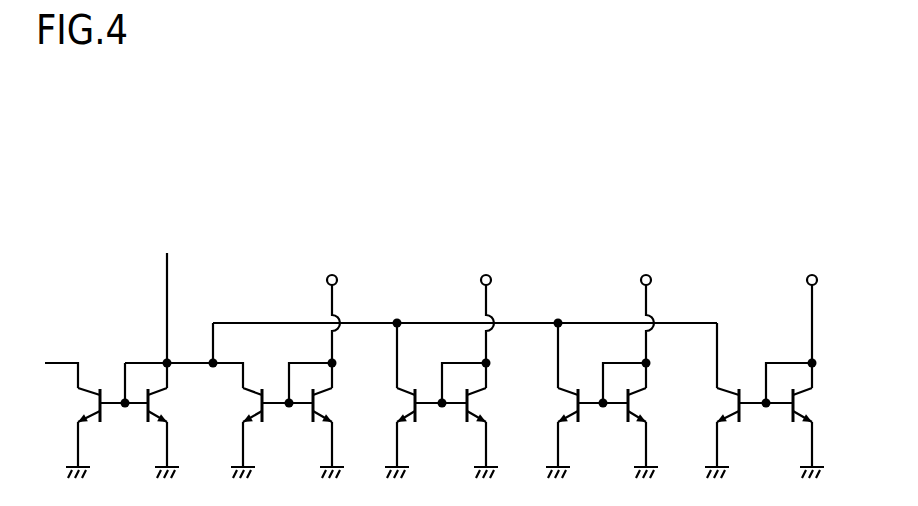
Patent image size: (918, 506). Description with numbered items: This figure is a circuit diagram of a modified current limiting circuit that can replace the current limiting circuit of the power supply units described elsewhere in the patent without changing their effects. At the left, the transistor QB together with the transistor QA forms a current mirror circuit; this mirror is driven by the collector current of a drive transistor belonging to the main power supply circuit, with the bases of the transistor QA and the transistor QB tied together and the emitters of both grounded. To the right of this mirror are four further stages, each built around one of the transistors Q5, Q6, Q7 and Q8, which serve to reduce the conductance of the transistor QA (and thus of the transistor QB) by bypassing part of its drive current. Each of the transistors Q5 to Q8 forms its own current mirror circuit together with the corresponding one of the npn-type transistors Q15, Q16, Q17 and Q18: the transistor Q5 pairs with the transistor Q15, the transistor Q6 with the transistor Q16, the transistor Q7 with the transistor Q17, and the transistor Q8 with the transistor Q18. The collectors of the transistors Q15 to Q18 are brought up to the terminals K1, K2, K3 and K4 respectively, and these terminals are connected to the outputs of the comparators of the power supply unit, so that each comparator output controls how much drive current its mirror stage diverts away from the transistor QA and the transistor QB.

The transistor QA is at (82, 420).
The transistor QB is at (165, 365).
The transistor Q8 is at (251, 420).
The npn-type transistor Q18 is at (333, 420).
The transistor Q7 is at (413, 400).
The npn-type transistor Q17 is at (489, 420).
The transistor Q6 is at (574, 400).
The npn-type transistor Q16 is at (649, 420).
The transistor Q5 is at (735, 400).
The npn-type transistor Q15 is at (812, 420).
The terminal K4 is at (339, 302).
The terminal K3 is at (490, 302).
The terminal K2 is at (650, 302).
The terminal K1 is at (807, 302).